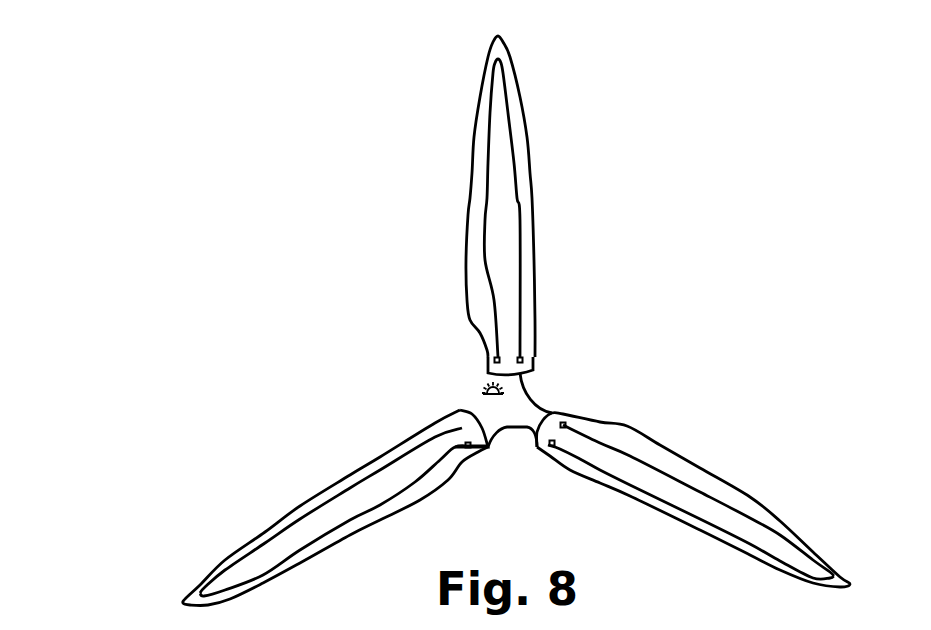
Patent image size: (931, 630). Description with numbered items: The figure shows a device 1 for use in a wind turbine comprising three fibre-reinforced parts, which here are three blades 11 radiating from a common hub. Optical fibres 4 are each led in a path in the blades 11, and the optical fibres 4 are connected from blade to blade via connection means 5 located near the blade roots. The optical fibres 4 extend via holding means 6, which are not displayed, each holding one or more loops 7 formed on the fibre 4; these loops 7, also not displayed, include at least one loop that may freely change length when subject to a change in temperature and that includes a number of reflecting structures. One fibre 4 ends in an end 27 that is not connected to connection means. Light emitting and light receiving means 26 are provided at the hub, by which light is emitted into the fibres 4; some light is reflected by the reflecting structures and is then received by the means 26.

The device 1 is at (175, 93).
The blades 11 is at (507, 321).
The connection means 5 is at (563, 423).
The light emitting and light receiving means 26 is at (477, 387).
The end 27 is at (453, 427).
The optical fibres 4 is at (693, 465).
The holding means 6 is at (693, 465).
The loops 7 is at (678, 476).